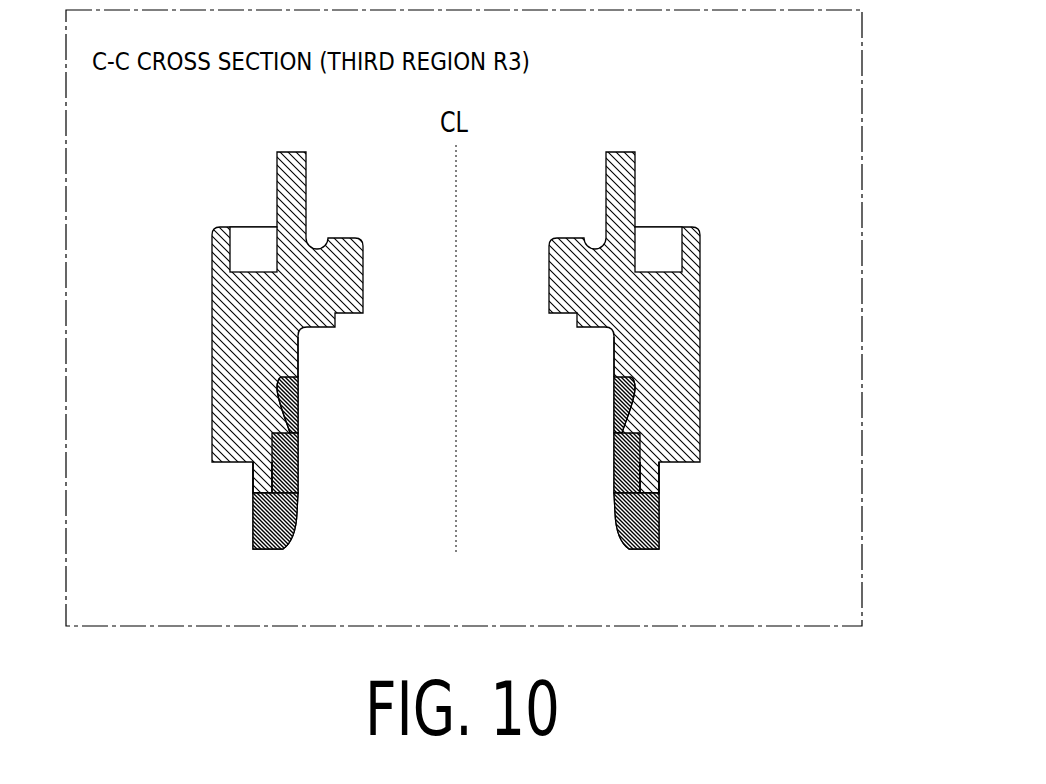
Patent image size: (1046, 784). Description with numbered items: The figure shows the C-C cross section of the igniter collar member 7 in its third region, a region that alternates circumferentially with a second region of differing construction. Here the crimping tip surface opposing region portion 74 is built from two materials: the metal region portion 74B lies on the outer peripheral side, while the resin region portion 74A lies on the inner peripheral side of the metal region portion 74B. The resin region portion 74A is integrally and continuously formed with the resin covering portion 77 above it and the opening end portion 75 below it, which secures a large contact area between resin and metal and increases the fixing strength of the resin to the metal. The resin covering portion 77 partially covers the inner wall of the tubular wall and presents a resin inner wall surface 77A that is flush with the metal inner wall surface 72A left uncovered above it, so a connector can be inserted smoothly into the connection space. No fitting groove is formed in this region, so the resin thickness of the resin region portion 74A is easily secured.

The igniter collar member 7 is at (684, 174).
The metal inner wall surface 72A is at (300, 362).
The crimping tip surface opposing region portion 74 is at (262, 482).
The resin region portion 74A is at (299, 478).
The metal region portion 74B is at (456, 477).
The opening end portion 75 is at (253, 523).
The resin covering portion 77 is at (300, 405).
The resin inner wall surface 77A is at (300, 388).